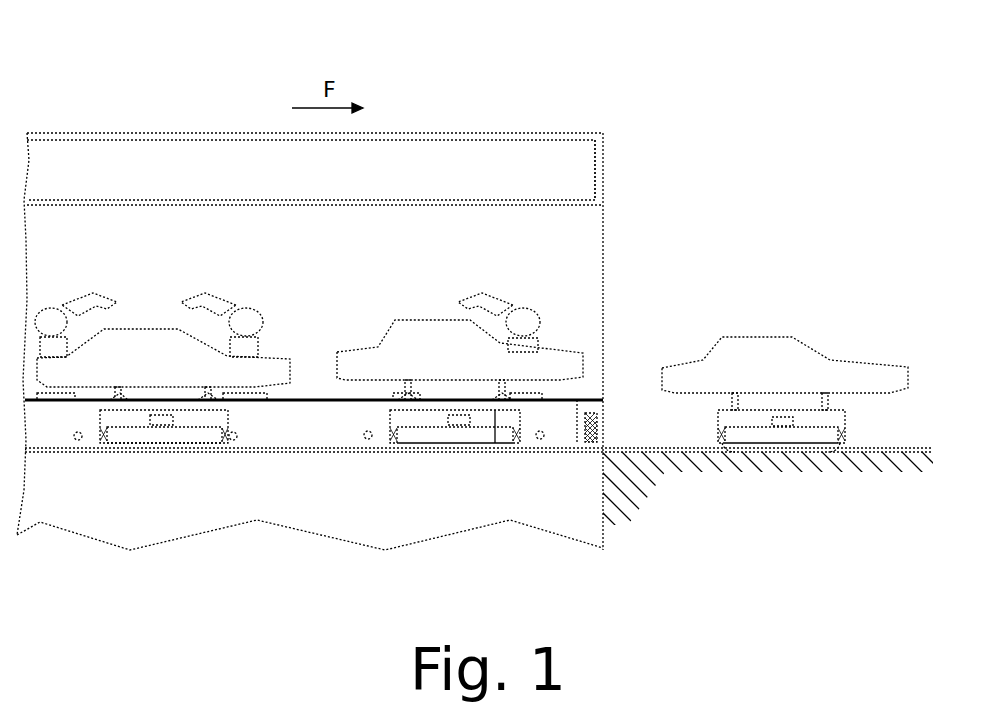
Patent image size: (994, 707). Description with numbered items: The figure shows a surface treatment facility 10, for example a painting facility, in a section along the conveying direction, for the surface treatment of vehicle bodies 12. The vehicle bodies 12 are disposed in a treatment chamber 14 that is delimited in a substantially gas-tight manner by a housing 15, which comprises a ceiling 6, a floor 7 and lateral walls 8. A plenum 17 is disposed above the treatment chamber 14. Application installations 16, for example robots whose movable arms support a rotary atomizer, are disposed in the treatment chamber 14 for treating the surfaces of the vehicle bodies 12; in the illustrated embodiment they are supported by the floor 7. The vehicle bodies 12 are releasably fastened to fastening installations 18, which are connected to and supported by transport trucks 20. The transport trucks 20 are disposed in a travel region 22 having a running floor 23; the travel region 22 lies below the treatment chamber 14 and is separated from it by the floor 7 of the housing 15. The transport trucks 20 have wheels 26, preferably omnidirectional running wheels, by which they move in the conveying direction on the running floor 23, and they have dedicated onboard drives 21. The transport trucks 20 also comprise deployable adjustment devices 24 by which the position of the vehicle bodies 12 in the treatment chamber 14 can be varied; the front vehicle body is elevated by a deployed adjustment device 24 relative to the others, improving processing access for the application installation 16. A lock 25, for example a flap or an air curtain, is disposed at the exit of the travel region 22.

The surface treatment facility 10 is at (118, 70).
The ceiling 6 is at (585, 205).
The floor 7 is at (583, 397).
The lateral walls 8 is at (586, 283).
The vehicle body 12 is at (145, 329).
The treatment chamber 14 is at (343, 247).
The housing 15 is at (310, 398).
The application installation 16 is at (67, 302).
The plenum 17 is at (578, 170).
The fastening installation 18 is at (115, 405).
The transport truck 20 is at (178, 435).
The onboard drive 21 is at (155, 428).
The travel region 22 is at (322, 438).
The running floor 23 is at (297, 452).
The adjustment device 24 is at (493, 445).
The lock 25 is at (603, 420).
The wheels 26 is at (115, 447).